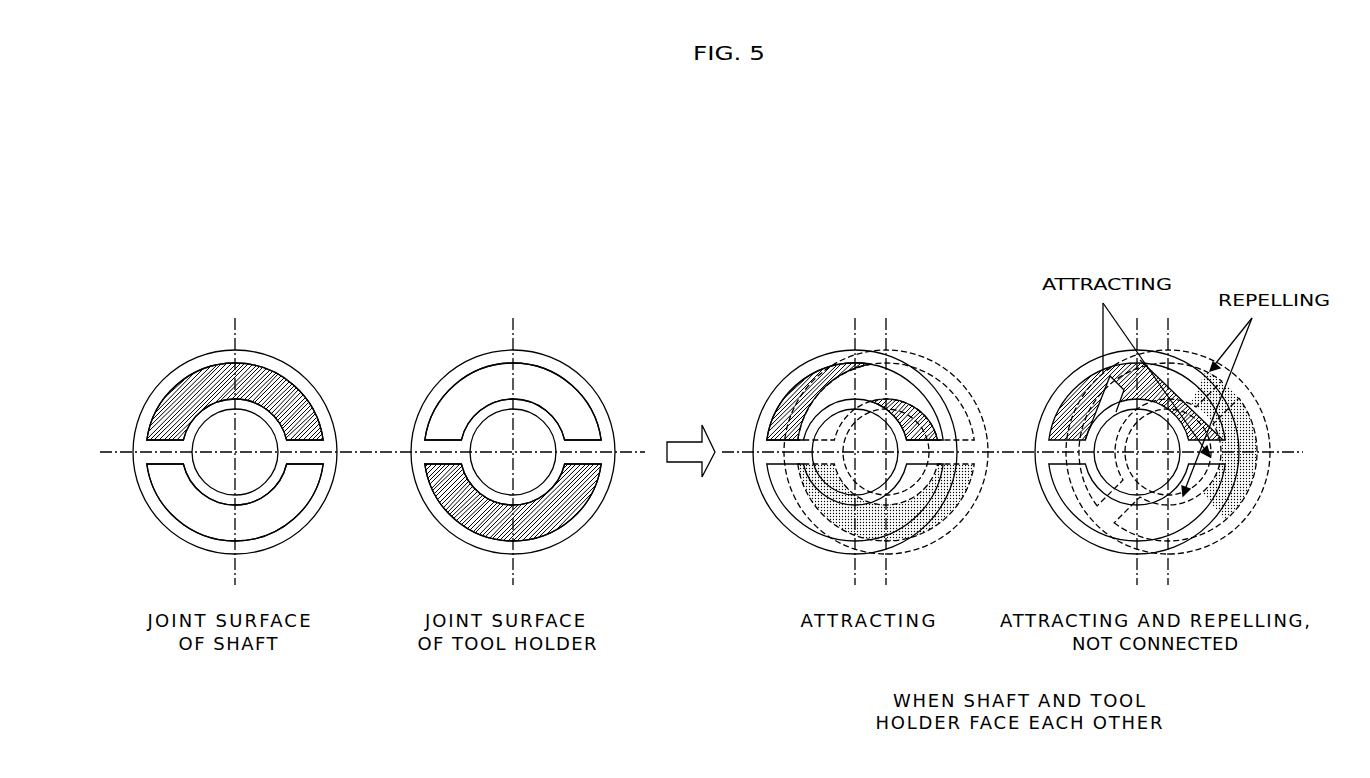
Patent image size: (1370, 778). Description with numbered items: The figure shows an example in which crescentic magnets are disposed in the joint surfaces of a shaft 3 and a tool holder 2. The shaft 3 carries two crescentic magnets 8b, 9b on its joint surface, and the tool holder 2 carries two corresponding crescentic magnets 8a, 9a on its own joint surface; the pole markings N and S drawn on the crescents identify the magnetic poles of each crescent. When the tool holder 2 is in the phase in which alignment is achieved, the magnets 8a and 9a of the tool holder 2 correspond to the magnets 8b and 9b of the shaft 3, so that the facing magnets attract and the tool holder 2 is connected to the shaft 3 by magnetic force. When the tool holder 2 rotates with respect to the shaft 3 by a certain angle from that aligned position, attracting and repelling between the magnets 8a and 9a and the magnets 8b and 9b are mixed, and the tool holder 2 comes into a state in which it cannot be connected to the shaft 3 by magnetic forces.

The tool holder 2 is at (851, 448).
The shaft 3 is at (676, 436).
The magnet 8a is at (553, 377).
The magnet 8b is at (277, 380).
The magnet 9a is at (468, 527).
The magnet 9b is at (183, 525).
The north magnetic pole N is at (199, 372).
The south magnetic pole S is at (307, 499).